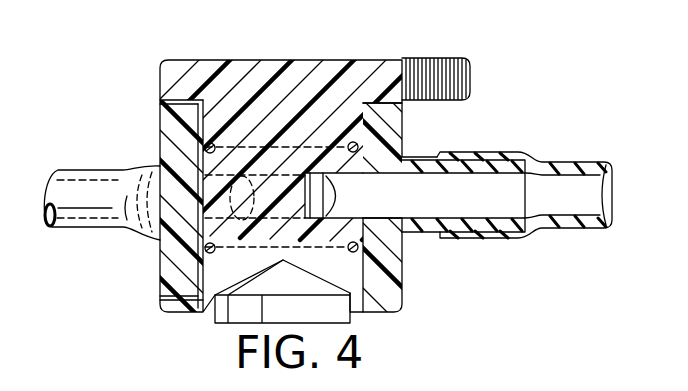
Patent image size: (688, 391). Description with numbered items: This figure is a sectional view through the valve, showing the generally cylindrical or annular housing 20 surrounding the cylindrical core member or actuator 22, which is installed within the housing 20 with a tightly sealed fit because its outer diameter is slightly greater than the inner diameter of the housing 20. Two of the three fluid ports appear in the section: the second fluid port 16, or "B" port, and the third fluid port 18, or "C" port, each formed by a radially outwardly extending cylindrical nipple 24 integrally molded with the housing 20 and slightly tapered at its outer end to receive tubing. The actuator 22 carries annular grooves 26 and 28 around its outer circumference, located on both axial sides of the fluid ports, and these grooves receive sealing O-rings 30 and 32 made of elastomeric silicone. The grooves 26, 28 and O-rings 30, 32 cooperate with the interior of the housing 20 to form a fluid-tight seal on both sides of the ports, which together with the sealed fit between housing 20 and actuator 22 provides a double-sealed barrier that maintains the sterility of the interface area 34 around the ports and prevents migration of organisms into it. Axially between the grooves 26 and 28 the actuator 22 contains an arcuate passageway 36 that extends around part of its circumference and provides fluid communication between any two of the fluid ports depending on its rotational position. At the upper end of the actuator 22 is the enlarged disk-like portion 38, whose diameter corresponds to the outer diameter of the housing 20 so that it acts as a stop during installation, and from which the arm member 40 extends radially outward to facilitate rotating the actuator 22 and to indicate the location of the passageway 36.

The second fluid port 16 is at (140, 169).
The third fluid port 18 is at (488, 180).
The housing 20 is at (397, 127).
The core member or actuator 22 is at (283, 110).
The nipple 24 is at (432, 228).
The annular groove 26 is at (166, 115).
The annular groove 28 is at (163, 247).
The sealing O-ring 30 is at (172, 142).
The sealing O-ring 32 is at (164, 265).
The interface area 34 is at (270, 180).
The arcuate passageway 36 is at (397, 258).
The disk-like portion 38 is at (178, 72).
The arm member 40 is at (448, 80).